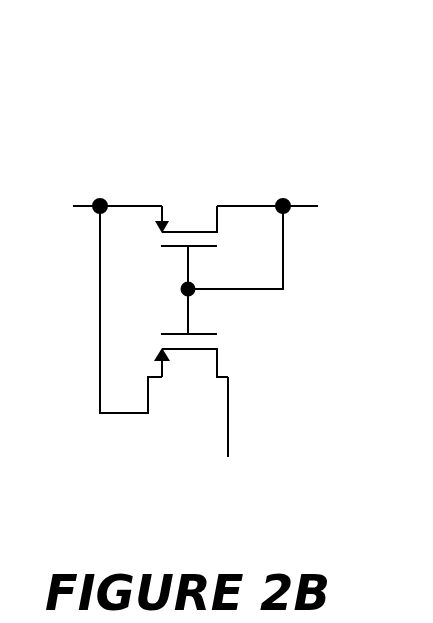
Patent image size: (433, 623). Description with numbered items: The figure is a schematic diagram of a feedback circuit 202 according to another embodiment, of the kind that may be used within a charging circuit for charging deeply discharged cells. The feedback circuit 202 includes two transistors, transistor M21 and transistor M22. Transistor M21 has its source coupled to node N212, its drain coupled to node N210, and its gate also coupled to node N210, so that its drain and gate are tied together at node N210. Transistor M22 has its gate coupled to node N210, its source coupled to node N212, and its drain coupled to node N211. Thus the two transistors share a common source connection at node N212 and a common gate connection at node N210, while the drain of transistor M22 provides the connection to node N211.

The feedback circuit 202 is at (211, 87).
The node N212 is at (96, 177).
The node N210 is at (291, 177).
The node N211 is at (262, 431).
The transistor M21 is at (177, 232).
The transistor M22 is at (196, 370).